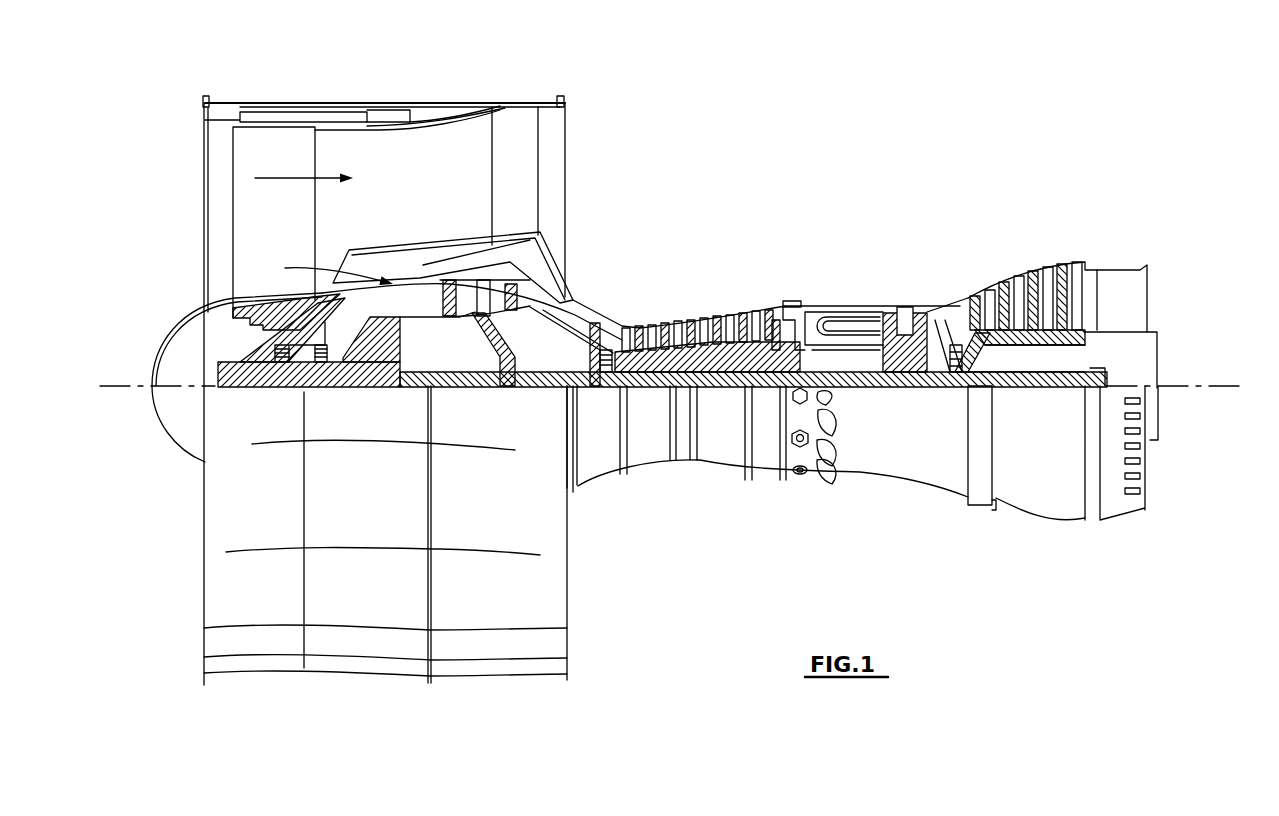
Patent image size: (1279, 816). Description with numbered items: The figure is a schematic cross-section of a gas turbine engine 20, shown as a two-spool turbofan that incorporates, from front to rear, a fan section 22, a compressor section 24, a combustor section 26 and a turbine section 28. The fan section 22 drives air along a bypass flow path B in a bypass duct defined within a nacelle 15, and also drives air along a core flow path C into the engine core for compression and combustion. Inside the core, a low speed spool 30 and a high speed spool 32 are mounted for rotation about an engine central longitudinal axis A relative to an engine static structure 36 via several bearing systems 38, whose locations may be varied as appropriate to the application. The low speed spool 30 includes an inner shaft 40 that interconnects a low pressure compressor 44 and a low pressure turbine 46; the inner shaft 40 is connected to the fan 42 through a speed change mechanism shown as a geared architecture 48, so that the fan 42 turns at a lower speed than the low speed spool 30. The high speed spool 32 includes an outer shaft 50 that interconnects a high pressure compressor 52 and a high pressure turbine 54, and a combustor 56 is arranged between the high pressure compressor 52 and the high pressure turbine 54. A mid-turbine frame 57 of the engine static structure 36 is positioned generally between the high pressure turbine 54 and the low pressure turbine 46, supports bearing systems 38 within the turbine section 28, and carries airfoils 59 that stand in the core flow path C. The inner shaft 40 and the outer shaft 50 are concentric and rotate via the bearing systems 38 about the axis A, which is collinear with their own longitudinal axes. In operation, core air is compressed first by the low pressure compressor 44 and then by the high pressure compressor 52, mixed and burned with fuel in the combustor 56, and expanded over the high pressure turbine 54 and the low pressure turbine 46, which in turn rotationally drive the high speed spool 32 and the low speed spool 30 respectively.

The nacelle 15 is at (387, 110).
The gas turbine engine 20 is at (848, 152).
The fan section 22 is at (322, 88).
The compressor section 24 is at (617, 290).
The combustor section 26 is at (840, 280).
The turbine section 28 is at (986, 243).
The low speed spool 30 is at (723, 402).
The high speed spool 32 is at (774, 348).
The engine static structure 36 is at (765, 488).
The bearing systems 38 is at (952, 393).
The inner shaft 40 is at (590, 395).
The fan 42 is at (387, 294).
The low pressure compressor 44 is at (490, 297).
The low pressure turbine 46 is at (1033, 282).
The geared architecture 48 is at (390, 390).
The outer shaft 50 is at (853, 394).
The high pressure compressor 52 is at (695, 352).
The high pressure turbine 54 is at (912, 322).
The combustor 56 is at (838, 327).
The mid-turbine frame 57 is at (950, 292).
The airfoils 59 is at (982, 350).
The engine central longitudinal axis A is at (1243, 386).
The bypass flow path B is at (293, 178).
The core flow path C is at (331, 274).